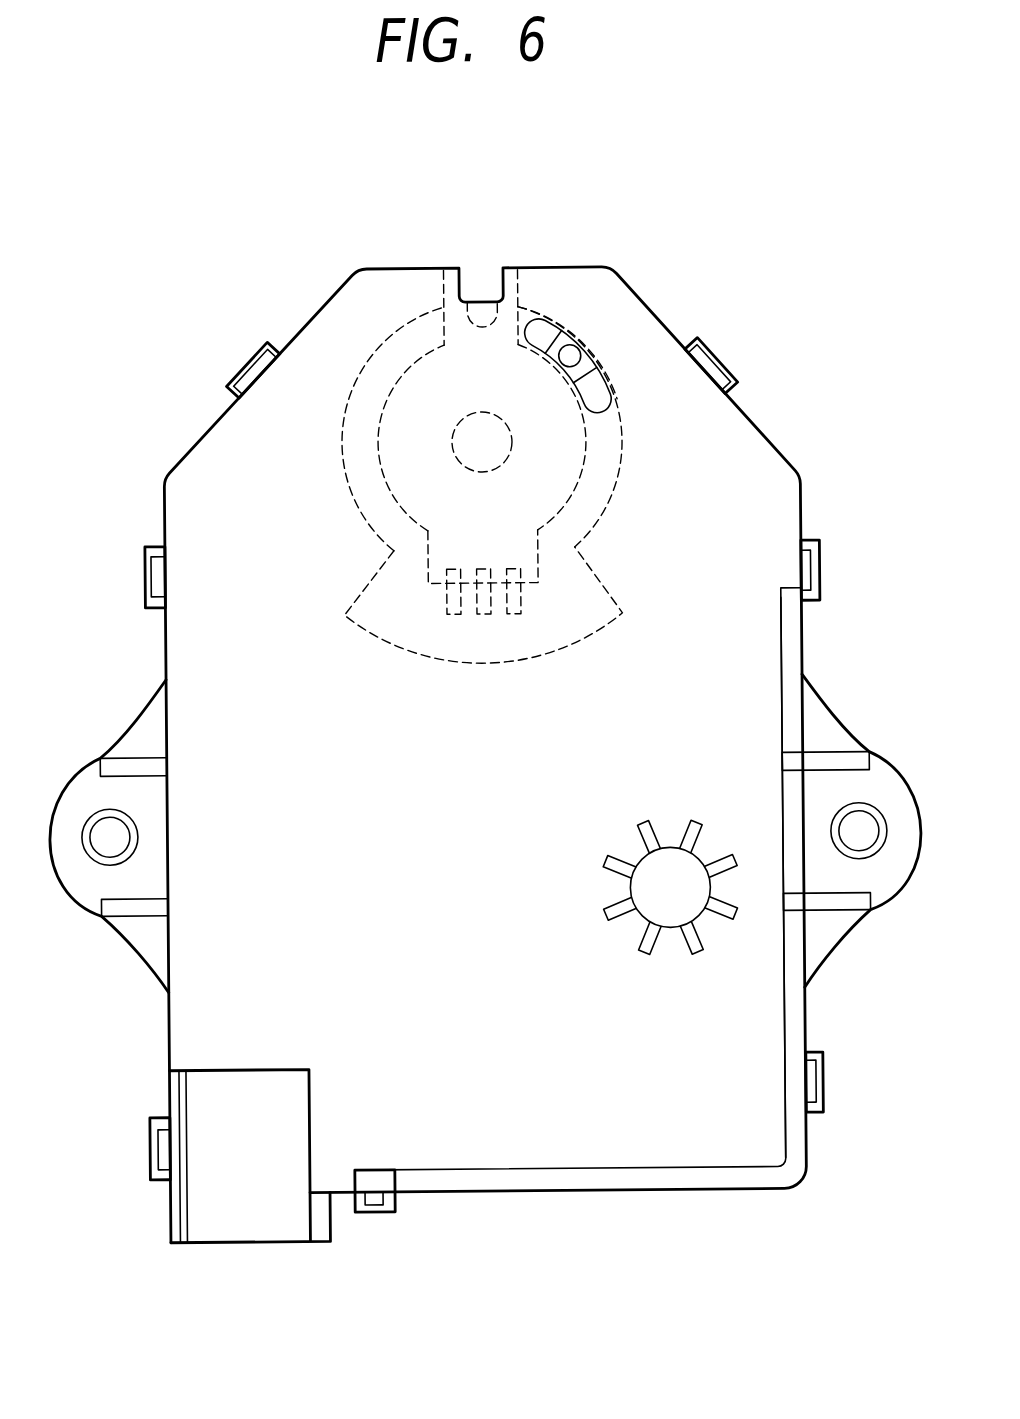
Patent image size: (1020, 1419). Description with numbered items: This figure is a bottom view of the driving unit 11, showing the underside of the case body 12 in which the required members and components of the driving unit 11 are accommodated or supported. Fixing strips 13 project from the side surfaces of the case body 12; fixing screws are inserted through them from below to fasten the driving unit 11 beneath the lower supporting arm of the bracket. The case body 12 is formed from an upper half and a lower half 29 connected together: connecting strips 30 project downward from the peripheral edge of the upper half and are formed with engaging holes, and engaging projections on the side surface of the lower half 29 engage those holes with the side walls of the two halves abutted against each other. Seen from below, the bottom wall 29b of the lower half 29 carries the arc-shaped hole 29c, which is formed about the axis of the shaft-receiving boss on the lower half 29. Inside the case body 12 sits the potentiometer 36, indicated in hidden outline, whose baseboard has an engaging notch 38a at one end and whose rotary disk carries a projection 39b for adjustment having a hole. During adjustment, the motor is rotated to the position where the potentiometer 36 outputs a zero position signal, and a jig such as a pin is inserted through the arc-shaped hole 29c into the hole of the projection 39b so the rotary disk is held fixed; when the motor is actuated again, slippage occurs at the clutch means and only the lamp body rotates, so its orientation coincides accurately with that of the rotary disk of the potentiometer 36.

The driving unit 11 is at (672, 276).
The case body 12 is at (212, 427).
The fixing strips 13 is at (78, 771).
The lower half 29 is at (610, 1138).
The bottom wall 29b is at (764, 620).
The arc-shaped hole 29c is at (595, 399).
The connecting strips 30 is at (721, 345).
The potentiometer 36 is at (353, 494).
The engaging notch 38a is at (486, 310).
The projection for adjustment 39b is at (551, 327).